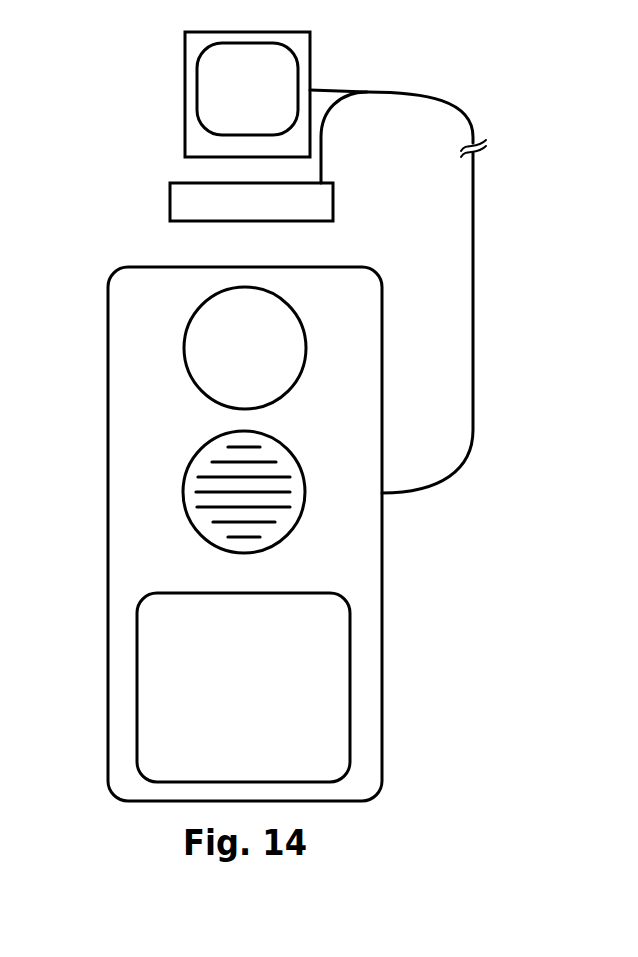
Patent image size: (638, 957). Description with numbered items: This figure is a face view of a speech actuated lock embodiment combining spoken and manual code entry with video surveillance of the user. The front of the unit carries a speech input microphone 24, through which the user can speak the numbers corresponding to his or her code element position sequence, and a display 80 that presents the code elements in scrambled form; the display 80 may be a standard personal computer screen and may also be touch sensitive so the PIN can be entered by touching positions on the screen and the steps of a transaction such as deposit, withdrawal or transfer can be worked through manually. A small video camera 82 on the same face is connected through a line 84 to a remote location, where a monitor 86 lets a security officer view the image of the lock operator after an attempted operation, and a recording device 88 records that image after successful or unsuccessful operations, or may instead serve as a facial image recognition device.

The speech input microphone 24 is at (191, 495).
The display 80 is at (353, 670).
The video camera 82 is at (273, 290).
The line 84 is at (473, 256).
The monitor 86 is at (310, 50).
The recording device 88 is at (170, 196).